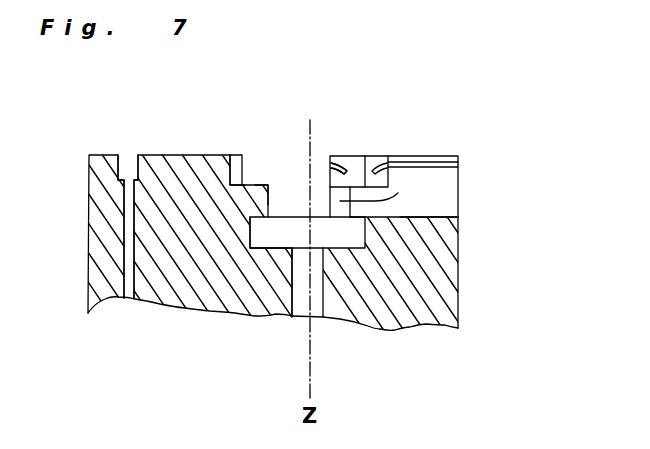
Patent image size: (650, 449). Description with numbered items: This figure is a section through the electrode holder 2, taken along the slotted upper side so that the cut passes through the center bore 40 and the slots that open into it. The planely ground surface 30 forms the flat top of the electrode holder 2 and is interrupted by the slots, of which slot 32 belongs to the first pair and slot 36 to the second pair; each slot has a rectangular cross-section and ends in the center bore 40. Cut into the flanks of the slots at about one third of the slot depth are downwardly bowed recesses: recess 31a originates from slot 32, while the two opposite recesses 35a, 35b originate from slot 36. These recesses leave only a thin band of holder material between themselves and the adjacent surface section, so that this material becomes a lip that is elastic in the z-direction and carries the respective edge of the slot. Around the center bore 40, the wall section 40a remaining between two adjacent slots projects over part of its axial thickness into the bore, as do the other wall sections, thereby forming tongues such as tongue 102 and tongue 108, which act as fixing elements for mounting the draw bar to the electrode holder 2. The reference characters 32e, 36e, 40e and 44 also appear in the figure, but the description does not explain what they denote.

The electrode holder 2 is at (480, 191).
The planely ground surface 30 is at (188, 156).
The recess 31a is at (438, 161).
The slot 32 is at (446, 191).
The housing edge 32e is at (446, 218).
The recess 35a is at (343, 162).
The recess 35b is at (236, 163).
The slot 36 is at (317, 177).
The lip end 36e is at (337, 168).
The center bore 40 is at (352, 233).
The wall section of center bore 40a is at (367, 156).
The step 40e is at (231, 178).
The slot 44 is at (120, 165).
The tongue 102 is at (398, 193).
The tongue 108 is at (265, 186).